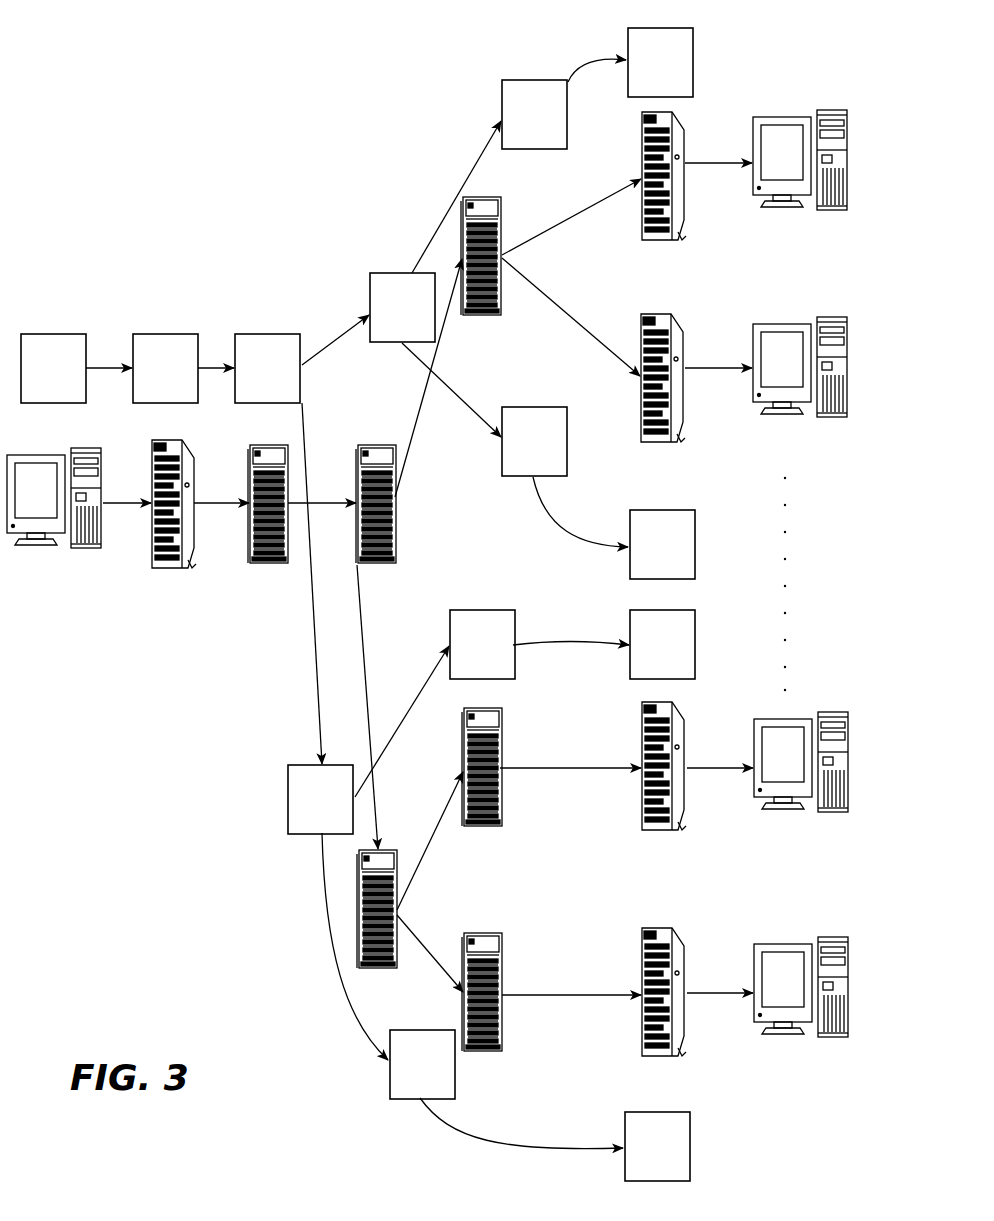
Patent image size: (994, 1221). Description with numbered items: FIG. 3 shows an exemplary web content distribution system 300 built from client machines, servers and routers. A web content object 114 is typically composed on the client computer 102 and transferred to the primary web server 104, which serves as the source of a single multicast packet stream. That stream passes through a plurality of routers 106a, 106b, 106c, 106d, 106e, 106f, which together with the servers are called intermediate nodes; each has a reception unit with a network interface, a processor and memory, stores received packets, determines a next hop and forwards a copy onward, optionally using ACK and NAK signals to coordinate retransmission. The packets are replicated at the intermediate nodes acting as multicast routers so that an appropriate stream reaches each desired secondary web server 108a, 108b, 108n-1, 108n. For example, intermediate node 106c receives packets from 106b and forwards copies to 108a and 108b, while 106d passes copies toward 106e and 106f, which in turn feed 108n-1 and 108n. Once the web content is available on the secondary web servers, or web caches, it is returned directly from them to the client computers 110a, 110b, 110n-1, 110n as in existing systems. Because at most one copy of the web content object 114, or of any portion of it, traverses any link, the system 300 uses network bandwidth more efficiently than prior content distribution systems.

The web content distribution system 300 is at (158, 151).
The client computer 102 is at (54, 516).
The primary web server 104 is at (174, 523).
The router 106a is at (270, 516).
The router 106b is at (378, 516).
The router 106c is at (482, 269).
The router 106d is at (378, 922).
The router 106e is at (484, 781).
The router 106f is at (482, 1006).
The secondary web server 108a is at (664, 199).
The secondary web server 108b is at (663, 402).
The secondary web server 108n-1 is at (666, 790).
The secondary web server 108n is at (664, 1016).
The client computer 110a is at (800, 174).
The client computer 110b is at (800, 383).
The client computer 110n-1 is at (801, 779).
The client computer 110n is at (801, 1005).
The web content object 114 is at (358, 604).